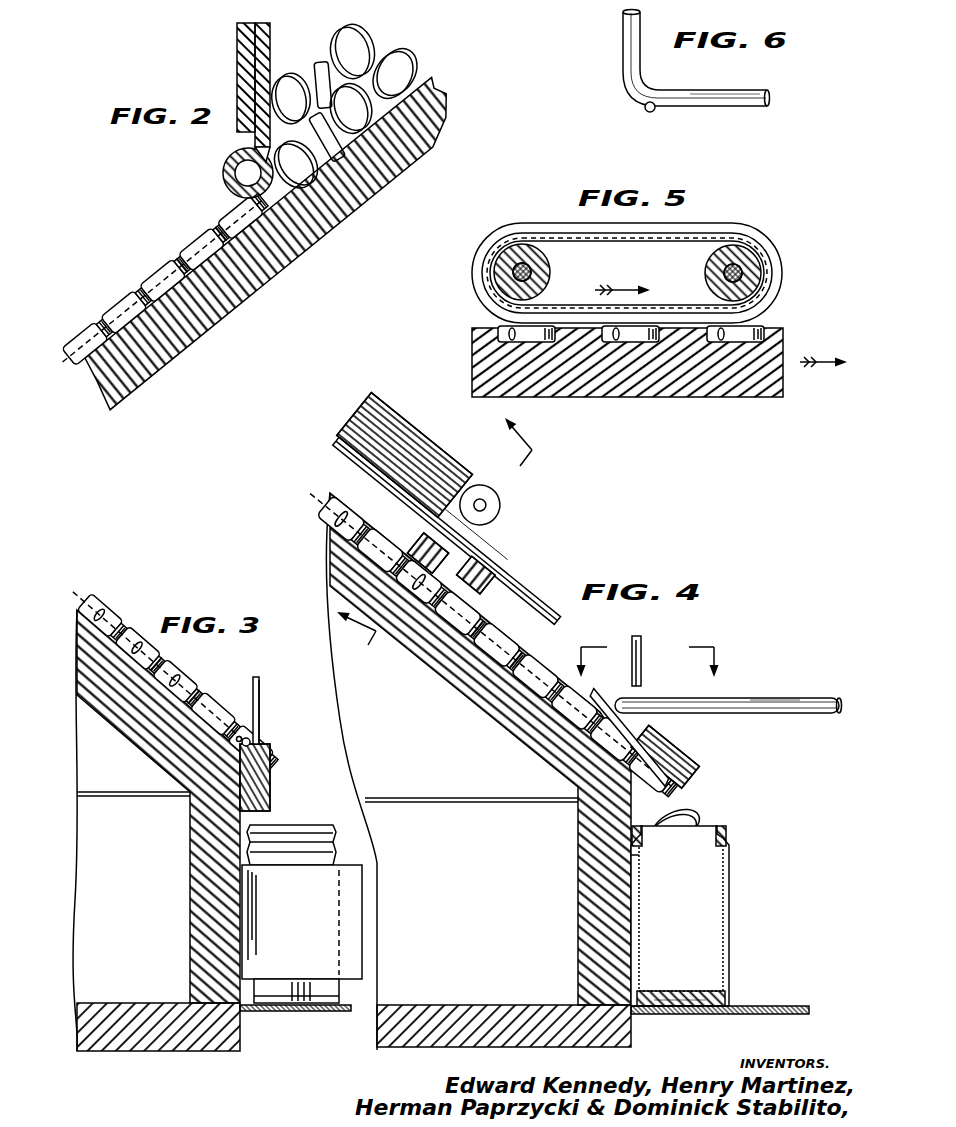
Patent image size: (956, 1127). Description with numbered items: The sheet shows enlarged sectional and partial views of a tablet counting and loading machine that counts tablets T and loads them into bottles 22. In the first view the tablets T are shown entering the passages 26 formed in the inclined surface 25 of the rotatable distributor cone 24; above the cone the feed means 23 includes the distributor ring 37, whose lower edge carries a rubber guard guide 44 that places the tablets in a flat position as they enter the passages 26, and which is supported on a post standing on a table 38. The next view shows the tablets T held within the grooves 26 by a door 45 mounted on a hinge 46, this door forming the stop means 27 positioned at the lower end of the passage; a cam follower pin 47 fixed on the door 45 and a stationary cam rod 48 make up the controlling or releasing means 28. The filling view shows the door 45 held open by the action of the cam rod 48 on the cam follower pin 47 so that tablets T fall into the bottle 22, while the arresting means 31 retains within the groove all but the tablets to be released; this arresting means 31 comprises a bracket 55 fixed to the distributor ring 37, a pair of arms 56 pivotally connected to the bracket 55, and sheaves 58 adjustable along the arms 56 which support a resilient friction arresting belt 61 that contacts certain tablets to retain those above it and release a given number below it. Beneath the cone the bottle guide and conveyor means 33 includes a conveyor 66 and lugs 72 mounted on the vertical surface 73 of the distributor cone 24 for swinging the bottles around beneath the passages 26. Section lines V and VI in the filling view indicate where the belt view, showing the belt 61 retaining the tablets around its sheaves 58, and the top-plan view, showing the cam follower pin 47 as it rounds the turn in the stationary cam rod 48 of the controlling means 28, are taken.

In FIG. 3, the bottle 22 is at (308, 833).
In FIG. 4, the bottle 22 is at (729, 901).
In FIG. 2, the feed means 23 is at (224, 92).
In FIG. 2, the distributor cone 24 is at (271, 243).
In FIG. 5, the distributor cone 24 is at (600, 362).
In FIG. 3, the distributor cone 24 is at (156, 830).
In FIG. 4, the distributor cone 24 is at (478, 771).
In FIG. 2, the inclined surface 25 is at (101, 338).
In FIG. 5, the inclined surface 25 is at (490, 330).
In FIG. 3, the inclined surface 25 is at (98, 628).
In FIG. 4, the inclined surface 25 is at (527, 680).
In FIG. 2, the passages 26 is at (240, 233).
In FIG. 5, the passages 26 is at (717, 334).
In FIG. 3, the passages 26 is at (187, 717).
In FIG. 4, the passages 26 is at (472, 637).
In FIG. 3, the stop means 27 is at (291, 712).
In FIG. 4, the stop means 27 is at (678, 697).
In FIG. 6, the controlling or releasing means 28 is at (718, 120).
In FIG. 4, the controlling or releasing means 28 is at (774, 678).
In FIG. 5, the arresting means 31 is at (653, 273).
In FIG. 4, the arresting means 31 is at (499, 524).
In FIG. 3, the bottle guide and conveyor means 33 is at (296, 1023).
In FIG. 4, the bottle guide and conveyor means 33 is at (680, 1025).
In FIG. 2, the distributor ring 37 is at (237, 36).
In FIG. 3, the table 38 is at (124, 1020).
In FIG. 4, the table 38 is at (392, 1022).
In FIG. 2, the rubber guard guide 44 is at (223, 173).
In FIG. 3, the door 45 is at (270, 756).
In FIG. 4, the door 45 is at (700, 764).
In FIG. 3, the hinge 46 is at (243, 738).
In FIG. 4, the hinge 46 is at (640, 687).
In FIG. 6, the cam follower pin 47 is at (644, 108).
In FIG. 3, the cam follower pin 47 is at (256, 677).
In FIG. 4, the cam follower pin 47 is at (600, 693).
In FIG. 6, the stationary cam rod 48 is at (623, 50).
In FIG. 4, the stationary cam rod 48 is at (664, 698).
In FIG. 4, the bracket 55 is at (435, 466).
In FIG. 5, the arms 56 is at (513, 272).
In FIG. 4, the arms 56 is at (522, 591).
In FIG. 5, the sheaves 58 is at (552, 272).
In FIG. 4, the sheaves 58 is at (500, 505).
In FIG. 5, the friction arresting belt 61 is at (672, 241).
In FIG. 4, the friction arresting belt 61 is at (480, 492).
In FIG. 3, the conveyor 66 is at (258, 1011).
In FIG. 4, the conveyor 66 is at (798, 1011).
In FIG. 3, the lugs 72 is at (347, 871).
In FIG. 3, the vertical surface 73 is at (250, 978).
In FIG. 4, the vertical surface 73 is at (631, 855).
In FIG. 2, the tablets T is at (346, 40).
In FIG. 5, the tablets T is at (530, 332).
In FIG. 3, the tablets T is at (99, 640).
In FIG. 4, the tablets T is at (408, 578).
In FIG. 4, the section line V— V is at (446, 542).
In FIG. 4, the section line VI— VI is at (647, 648).